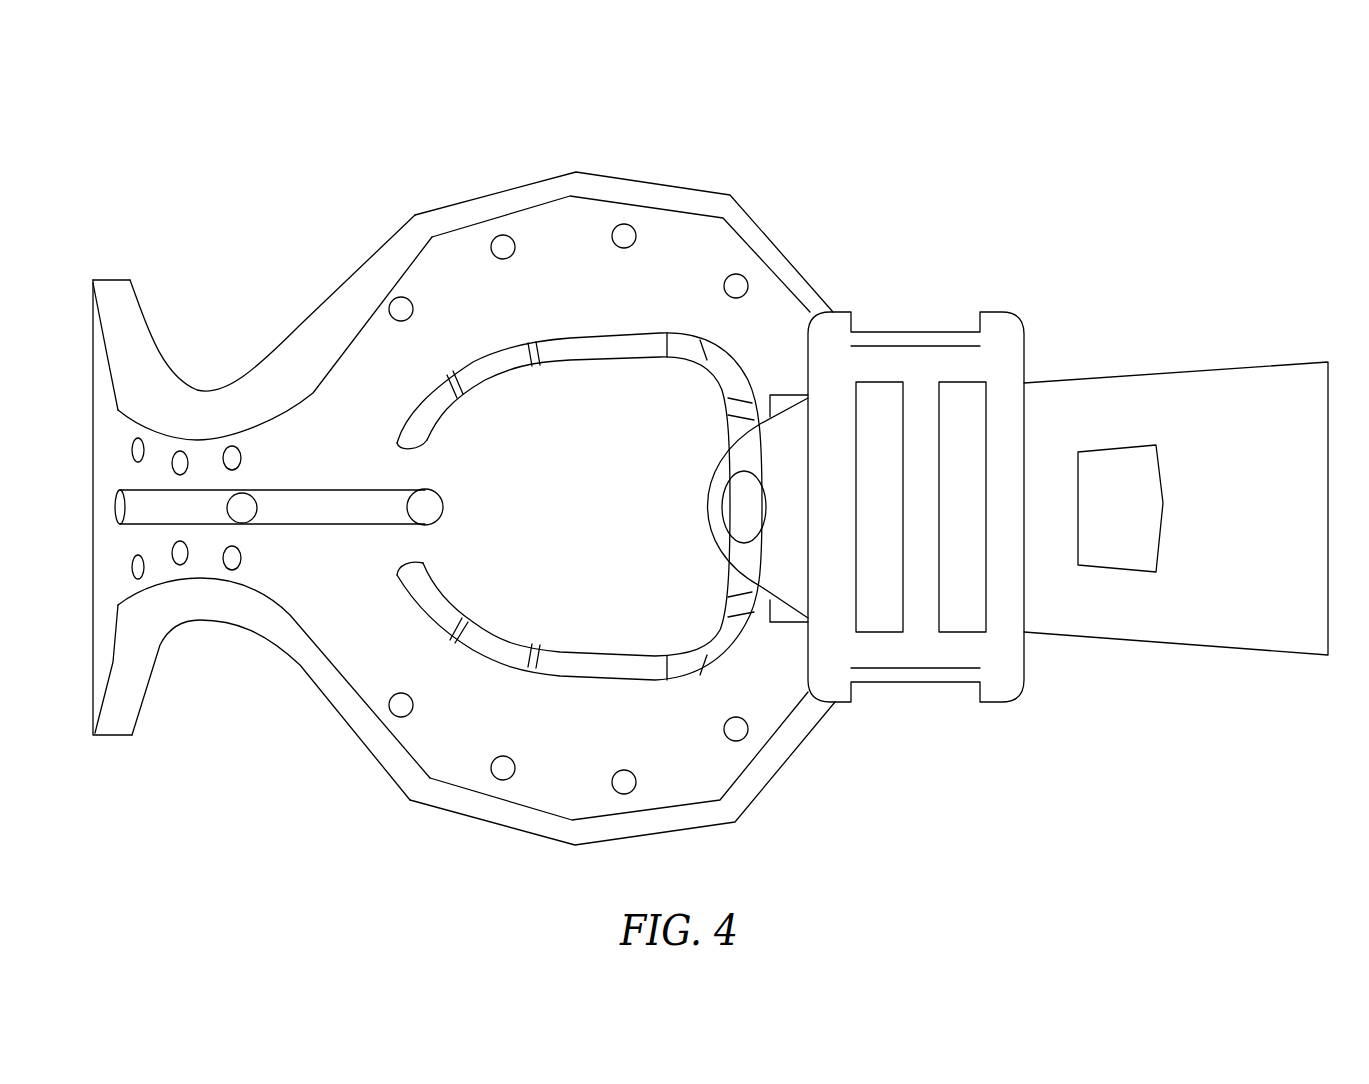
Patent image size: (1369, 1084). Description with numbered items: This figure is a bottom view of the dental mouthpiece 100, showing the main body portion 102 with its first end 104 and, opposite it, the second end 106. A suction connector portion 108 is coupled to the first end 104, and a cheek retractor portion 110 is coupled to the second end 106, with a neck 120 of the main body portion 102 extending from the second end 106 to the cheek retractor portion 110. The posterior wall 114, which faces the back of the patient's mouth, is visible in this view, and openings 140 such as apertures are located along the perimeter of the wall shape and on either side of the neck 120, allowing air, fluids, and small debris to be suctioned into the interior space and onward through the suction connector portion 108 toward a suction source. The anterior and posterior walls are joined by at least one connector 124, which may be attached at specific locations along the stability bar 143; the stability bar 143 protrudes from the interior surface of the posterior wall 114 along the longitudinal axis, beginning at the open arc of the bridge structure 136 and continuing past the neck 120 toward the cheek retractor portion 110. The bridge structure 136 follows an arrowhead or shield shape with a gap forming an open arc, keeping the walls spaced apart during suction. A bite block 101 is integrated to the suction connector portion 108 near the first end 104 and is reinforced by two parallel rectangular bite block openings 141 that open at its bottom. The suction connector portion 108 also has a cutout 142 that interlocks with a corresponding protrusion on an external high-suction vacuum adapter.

The dental mouthpiece 100 is at (1160, 98).
The bite block 101 is at (955, 328).
The main body portion 102 is at (690, 70).
The first end 104 is at (805, 782).
The second end 106 is at (278, 298).
The suction connector portion 108 is at (1283, 655).
The cheek retractor portion 110 is at (118, 735).
The posterior wall 114 is at (707, 247).
The neck 120 is at (178, 352).
The connector 124 is at (400, 513).
The bridge structure 136 is at (655, 683).
The openings 140 is at (512, 240).
The bite block openings 141 is at (878, 410).
The cutout 142 is at (1120, 570).
The stability bar 143 is at (300, 490).